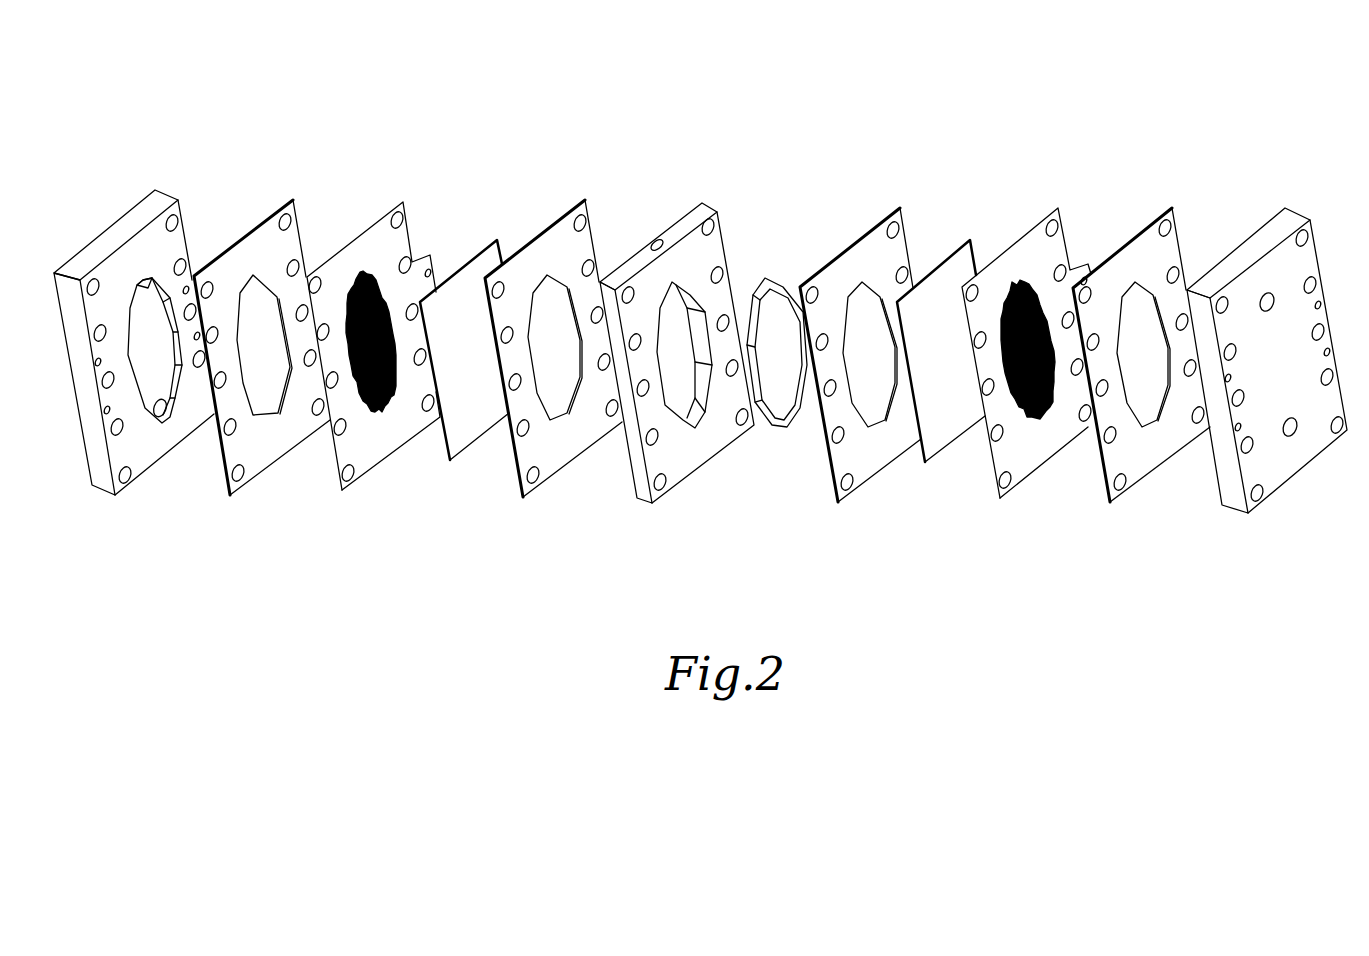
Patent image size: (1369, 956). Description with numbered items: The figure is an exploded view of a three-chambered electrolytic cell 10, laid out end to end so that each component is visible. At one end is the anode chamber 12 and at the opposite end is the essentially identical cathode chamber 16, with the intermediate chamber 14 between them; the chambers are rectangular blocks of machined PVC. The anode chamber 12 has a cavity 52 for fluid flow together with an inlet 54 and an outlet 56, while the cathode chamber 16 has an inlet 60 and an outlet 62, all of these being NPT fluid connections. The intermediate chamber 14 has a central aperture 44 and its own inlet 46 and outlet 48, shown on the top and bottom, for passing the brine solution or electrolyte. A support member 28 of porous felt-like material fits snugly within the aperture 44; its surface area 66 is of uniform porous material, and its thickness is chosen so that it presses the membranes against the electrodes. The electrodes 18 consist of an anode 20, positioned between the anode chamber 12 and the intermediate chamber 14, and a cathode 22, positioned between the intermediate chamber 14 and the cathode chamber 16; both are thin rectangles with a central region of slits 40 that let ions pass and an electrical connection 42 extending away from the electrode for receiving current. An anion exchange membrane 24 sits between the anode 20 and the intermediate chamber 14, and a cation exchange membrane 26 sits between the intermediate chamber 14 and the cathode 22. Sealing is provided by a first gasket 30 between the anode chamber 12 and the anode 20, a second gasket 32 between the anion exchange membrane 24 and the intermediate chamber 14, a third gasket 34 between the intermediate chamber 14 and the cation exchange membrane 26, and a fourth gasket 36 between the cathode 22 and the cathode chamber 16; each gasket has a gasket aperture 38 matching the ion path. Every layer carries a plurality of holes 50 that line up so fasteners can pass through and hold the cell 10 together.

The three-chambered electrolytic cell 10 is at (924, 98).
The anode chamber 12 is at (163, 342).
The intermediate chamber 14 is at (700, 341).
The cathode chamber 16 is at (1274, 357).
The electrodes 18 is at (714, 344).
The anode 20 is at (390, 346).
The cathode 22 is at (1042, 353).
The anion exchange membrane 24 is at (490, 247).
The cation exchange membrane 26 is at (963, 242).
The support member 28 is at (772, 349).
The first gasket 30 is at (262, 339).
The second gasket 32 is at (585, 342).
The third gasket 34 is at (875, 227).
The fourth gasket 36 is at (1147, 225).
The gasket apertures 38 is at (268, 413).
The slits 40 is at (397, 343).
The electrical connection 42 is at (1077, 266).
The aperture 44 is at (698, 399).
The inlet 46 is at (653, 242).
The outlet 48 is at (685, 425).
The holes 50 is at (129, 481).
The cavity 52 is at (152, 343).
The inlet 54 is at (161, 411).
The outlet 56 is at (150, 279).
The inlet 60 is at (1294, 433).
The outlet 62 is at (1272, 296).
The surface area 66 is at (793, 431).